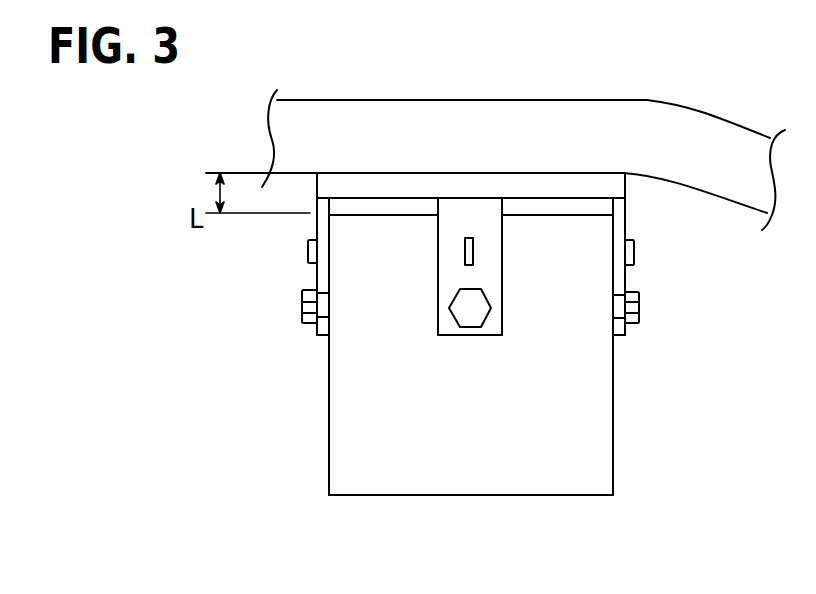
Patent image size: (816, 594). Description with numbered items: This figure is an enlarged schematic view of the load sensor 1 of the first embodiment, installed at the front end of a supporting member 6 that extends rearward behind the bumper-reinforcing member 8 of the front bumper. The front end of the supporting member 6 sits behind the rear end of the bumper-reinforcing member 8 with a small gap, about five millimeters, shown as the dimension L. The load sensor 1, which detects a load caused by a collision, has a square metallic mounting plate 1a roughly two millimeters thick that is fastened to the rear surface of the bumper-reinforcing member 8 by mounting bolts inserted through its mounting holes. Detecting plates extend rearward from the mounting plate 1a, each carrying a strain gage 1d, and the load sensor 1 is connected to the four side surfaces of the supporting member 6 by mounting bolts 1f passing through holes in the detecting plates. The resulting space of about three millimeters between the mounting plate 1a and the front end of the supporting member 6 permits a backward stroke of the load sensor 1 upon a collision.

The bumper-reinforcing member 8 is at (537, 100).
The load sensor 1 is at (518, 239).
The mounting plate 1a is at (580, 190).
The strain gage 1d is at (474, 250).
The mounting bolt 1f is at (302, 315).
The supporting member 6 is at (613, 433).